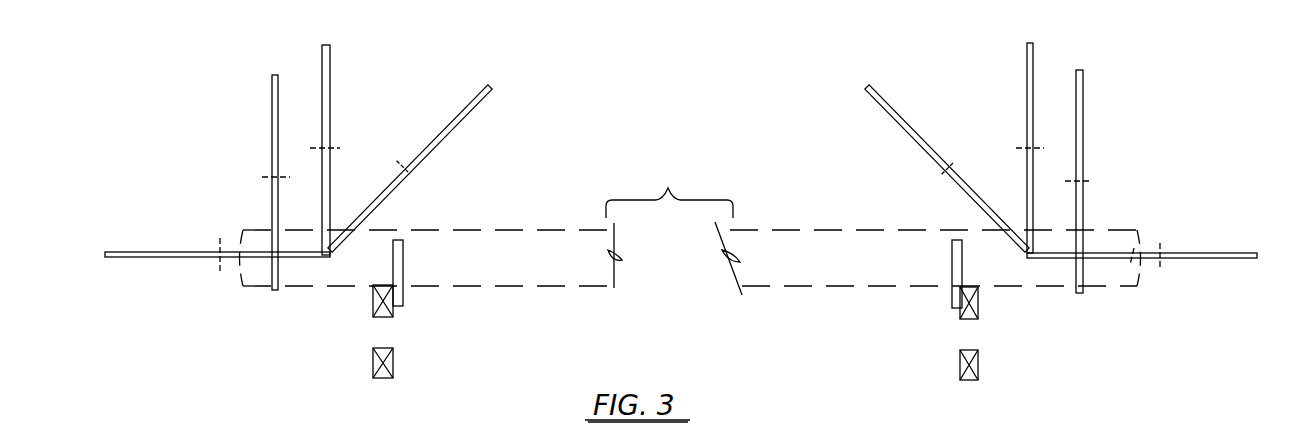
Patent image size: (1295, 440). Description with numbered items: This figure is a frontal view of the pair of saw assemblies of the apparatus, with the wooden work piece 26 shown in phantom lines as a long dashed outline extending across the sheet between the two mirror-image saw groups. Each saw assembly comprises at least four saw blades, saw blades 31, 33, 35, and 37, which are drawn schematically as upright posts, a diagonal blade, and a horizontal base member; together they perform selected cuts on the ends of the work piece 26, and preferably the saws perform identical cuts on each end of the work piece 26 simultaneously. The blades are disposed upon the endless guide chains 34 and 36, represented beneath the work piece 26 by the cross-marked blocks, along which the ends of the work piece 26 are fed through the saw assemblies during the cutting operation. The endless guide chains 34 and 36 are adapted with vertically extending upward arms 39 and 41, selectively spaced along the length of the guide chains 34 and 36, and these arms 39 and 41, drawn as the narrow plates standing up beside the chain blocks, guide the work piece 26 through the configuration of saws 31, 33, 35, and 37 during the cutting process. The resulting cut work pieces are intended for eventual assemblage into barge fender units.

The work piece 26 is at (840, 230).
The saw blade 31 is at (1083, 108).
The saw blade 33 is at (913, 127).
The endless guide chain 34 is at (978, 302).
The saw blade 35 is at (1197, 255).
The endless guide chain 36 is at (373, 305).
The saw blade 37 is at (1028, 90).
The upward arm 39 is at (403, 258).
The upward arm 41 is at (952, 254).